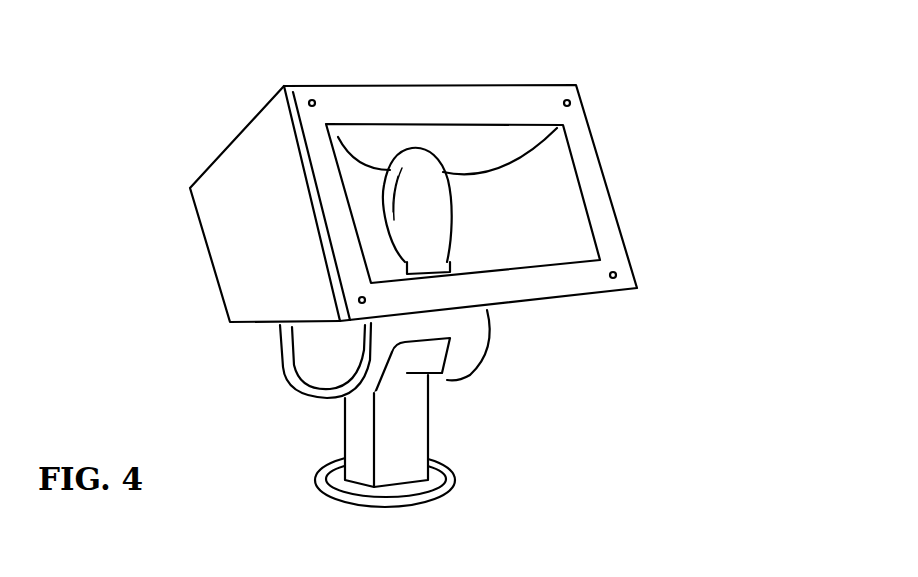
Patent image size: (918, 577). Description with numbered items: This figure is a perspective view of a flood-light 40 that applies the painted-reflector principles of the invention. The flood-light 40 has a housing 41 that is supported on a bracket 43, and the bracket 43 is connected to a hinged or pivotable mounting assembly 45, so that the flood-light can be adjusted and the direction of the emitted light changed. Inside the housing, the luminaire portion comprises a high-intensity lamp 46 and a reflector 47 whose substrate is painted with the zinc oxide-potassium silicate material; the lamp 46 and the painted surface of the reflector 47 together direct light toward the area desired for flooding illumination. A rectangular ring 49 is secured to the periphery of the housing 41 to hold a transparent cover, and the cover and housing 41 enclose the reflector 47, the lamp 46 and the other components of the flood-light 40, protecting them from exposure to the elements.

The flood-light 40 is at (693, 133).
The housing 41 is at (180, 182).
The bracket 43 is at (438, 427).
The mounting assembly 45 is at (277, 382).
The high-intensity lamp 46 is at (448, 156).
The reflector 47 is at (534, 228).
The rectangular ring 49 is at (611, 202).